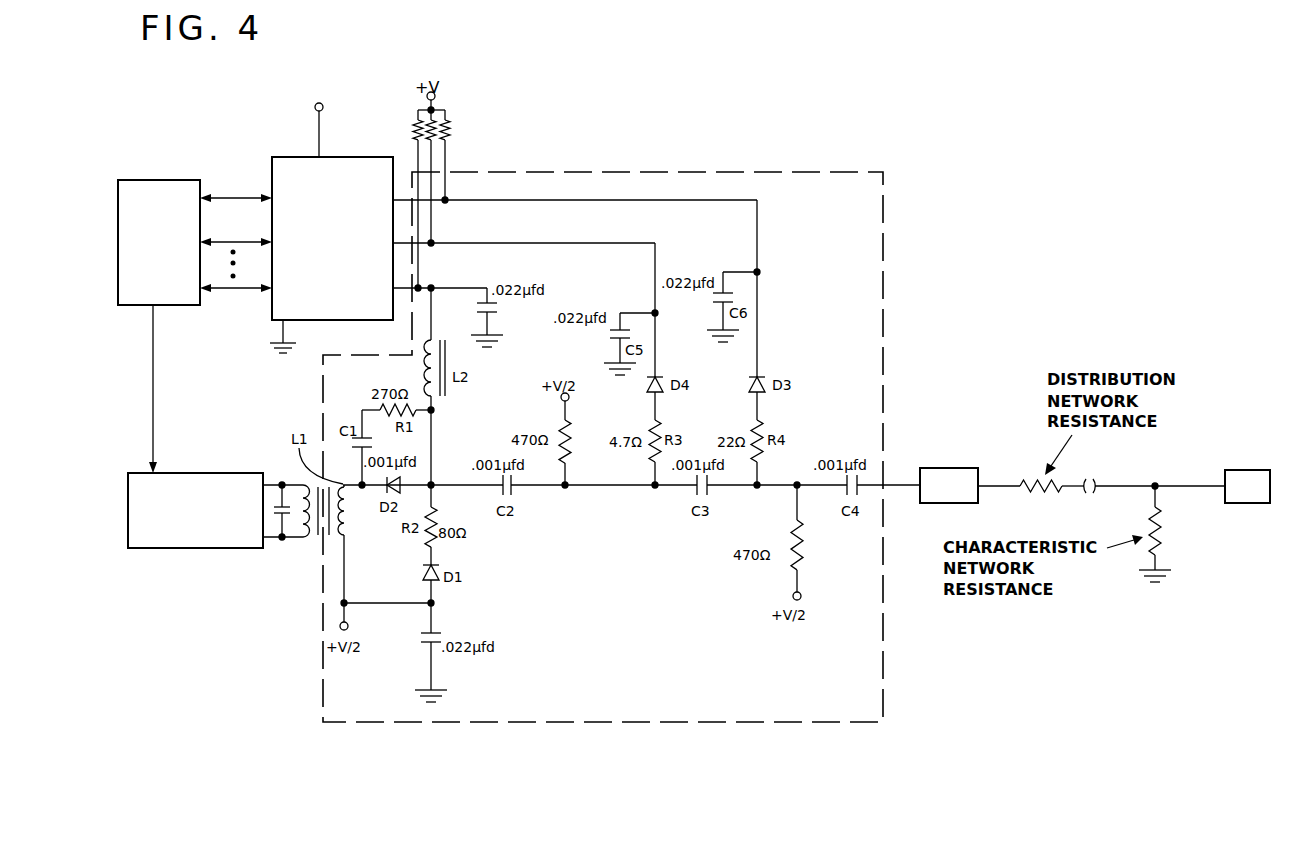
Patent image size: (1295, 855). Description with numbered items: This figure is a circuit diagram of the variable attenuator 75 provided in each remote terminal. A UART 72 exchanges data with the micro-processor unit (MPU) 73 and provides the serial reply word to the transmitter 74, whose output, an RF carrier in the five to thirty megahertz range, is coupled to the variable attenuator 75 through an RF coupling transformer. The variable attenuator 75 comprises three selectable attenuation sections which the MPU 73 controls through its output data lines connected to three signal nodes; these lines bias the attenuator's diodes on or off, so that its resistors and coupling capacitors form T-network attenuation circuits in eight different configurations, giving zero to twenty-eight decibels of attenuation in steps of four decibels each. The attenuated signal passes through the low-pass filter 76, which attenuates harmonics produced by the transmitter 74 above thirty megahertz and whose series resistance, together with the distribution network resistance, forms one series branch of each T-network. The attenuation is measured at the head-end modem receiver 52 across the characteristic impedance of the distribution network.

The UART 72 is at (152, 180).
The micro-processor unit (MPU) 73 is at (372, 157).
The transmitter 74 is at (195, 473).
The variable attenuator 75 is at (802, 172).
The low-pass filter 76 is at (946, 468).
The head-end modem receiver 52 is at (1250, 470).